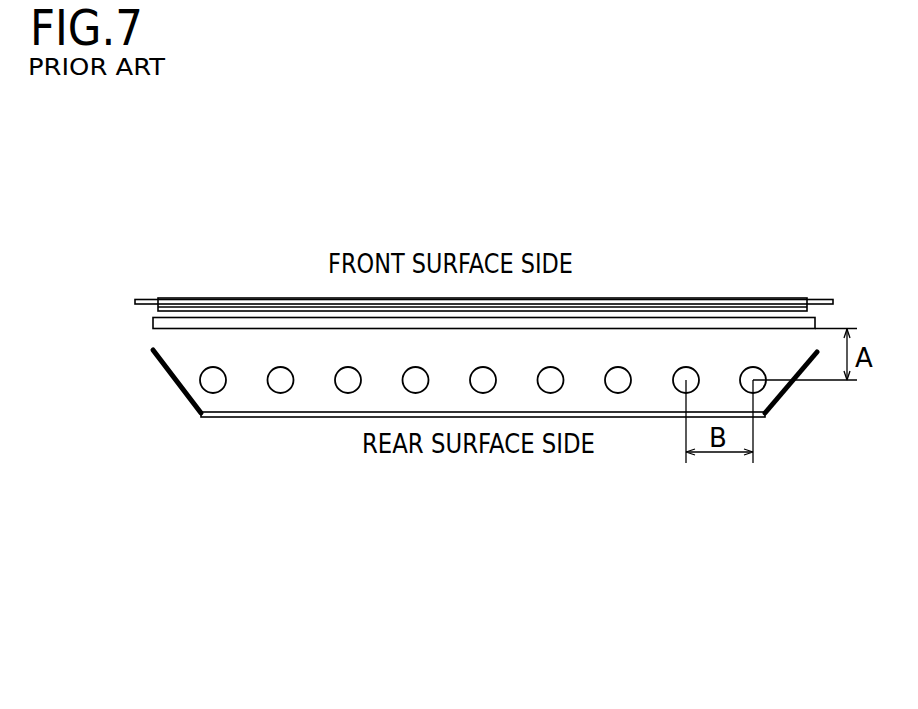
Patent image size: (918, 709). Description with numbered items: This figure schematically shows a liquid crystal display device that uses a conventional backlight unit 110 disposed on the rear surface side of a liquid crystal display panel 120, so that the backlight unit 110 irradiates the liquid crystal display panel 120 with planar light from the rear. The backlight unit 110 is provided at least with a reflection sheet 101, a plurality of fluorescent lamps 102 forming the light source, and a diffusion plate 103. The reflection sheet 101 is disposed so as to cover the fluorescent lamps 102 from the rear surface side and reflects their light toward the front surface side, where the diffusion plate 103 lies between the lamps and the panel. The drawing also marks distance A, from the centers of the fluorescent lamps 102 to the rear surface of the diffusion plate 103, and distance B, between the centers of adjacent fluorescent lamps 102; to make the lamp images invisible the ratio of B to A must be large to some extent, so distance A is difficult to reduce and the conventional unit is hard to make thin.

The liquid crystal display panel 120 is at (153, 295).
The diffusion plate 103 is at (155, 321).
The reflection sheet 101 is at (167, 378).
The fluorescent lamps 102 is at (224, 371).
The backlight unit 110 is at (190, 420).